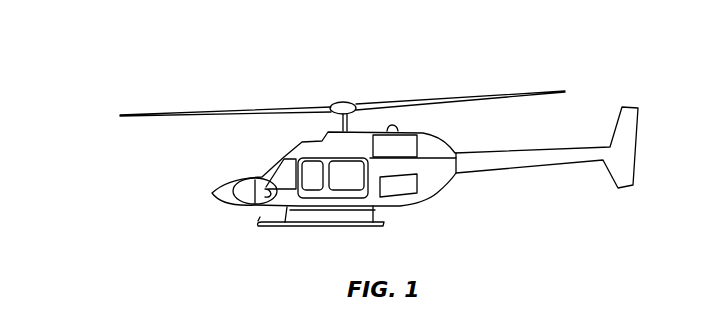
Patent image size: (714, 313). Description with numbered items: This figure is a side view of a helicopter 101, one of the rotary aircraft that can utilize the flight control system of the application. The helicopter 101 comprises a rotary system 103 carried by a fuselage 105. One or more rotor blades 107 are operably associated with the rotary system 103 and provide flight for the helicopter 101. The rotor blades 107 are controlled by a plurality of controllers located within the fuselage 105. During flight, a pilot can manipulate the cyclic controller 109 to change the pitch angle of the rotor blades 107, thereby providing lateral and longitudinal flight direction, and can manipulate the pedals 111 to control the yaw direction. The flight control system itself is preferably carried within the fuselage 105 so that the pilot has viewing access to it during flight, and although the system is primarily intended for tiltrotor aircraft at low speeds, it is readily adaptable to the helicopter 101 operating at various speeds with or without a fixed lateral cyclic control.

The helicopter 101 is at (140, 68).
The rotary system 103 is at (322, 95).
The fuselage 105 is at (276, 162).
The rotor blades 107 is at (421, 102).
The cyclic controller 109 is at (249, 187).
The pedals 111 is at (238, 193).